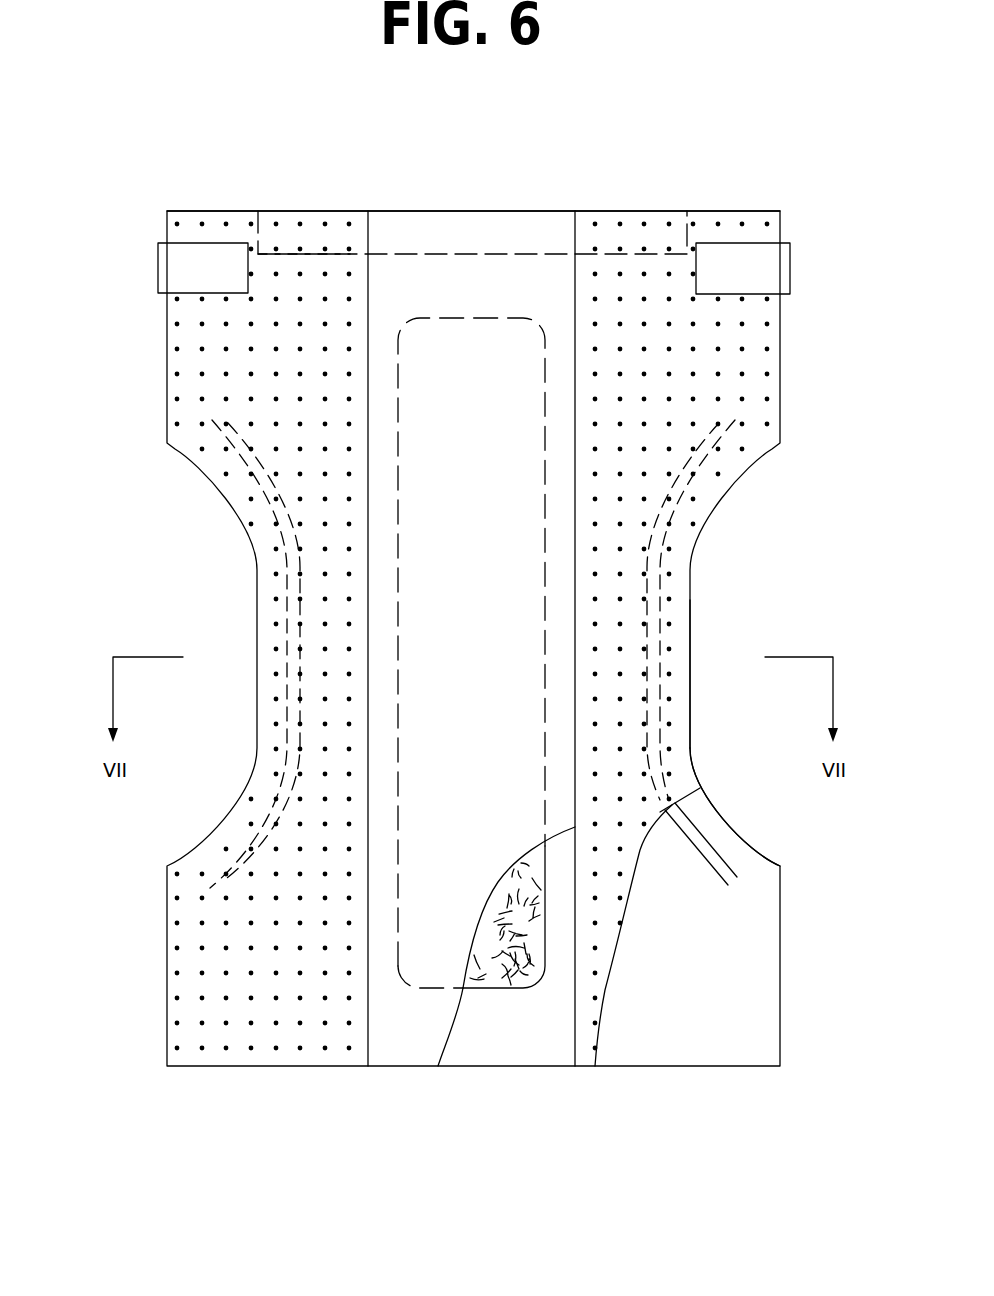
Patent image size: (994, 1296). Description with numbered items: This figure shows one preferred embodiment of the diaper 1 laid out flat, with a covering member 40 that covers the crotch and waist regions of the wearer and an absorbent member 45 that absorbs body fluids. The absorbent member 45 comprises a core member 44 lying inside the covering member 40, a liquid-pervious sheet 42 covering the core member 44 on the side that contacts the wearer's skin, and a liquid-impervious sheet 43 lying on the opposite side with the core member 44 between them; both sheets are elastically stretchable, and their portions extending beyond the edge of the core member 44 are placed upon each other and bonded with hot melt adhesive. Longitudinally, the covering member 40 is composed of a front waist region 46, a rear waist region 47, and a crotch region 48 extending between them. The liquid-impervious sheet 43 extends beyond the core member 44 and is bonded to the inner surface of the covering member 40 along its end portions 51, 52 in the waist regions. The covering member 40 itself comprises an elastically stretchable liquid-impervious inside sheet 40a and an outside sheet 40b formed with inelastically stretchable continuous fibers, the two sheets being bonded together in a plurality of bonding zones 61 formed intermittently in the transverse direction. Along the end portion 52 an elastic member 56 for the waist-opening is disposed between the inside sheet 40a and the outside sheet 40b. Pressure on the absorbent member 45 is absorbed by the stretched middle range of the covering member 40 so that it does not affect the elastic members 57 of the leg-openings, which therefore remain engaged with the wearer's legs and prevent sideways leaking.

The diaper 1 is at (665, 147).
The covering member 40 is at (784, 341).
The inside sheet 40a is at (672, 733).
The outside sheet 40b is at (752, 862).
The liquid-pervious sheet 42 is at (390, 988).
The liquid-impervious sheet 43 is at (563, 988).
The core member 44 is at (530, 897).
The absorbent member 45 is at (366, 1021).
The front waist region 46 is at (78, 876).
The rear waist region 47 is at (78, 212).
The crotch region 48 is at (78, 445).
The end portion 51 is at (702, 1030).
The end portion 52 is at (620, 275).
The elastic member 56 is at (334, 250).
The elastic members 57 is at (700, 866).
The bonding zones 61 is at (202, 350).